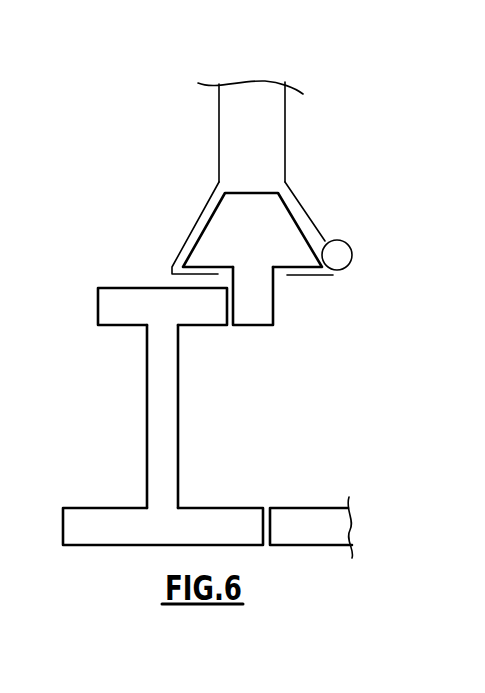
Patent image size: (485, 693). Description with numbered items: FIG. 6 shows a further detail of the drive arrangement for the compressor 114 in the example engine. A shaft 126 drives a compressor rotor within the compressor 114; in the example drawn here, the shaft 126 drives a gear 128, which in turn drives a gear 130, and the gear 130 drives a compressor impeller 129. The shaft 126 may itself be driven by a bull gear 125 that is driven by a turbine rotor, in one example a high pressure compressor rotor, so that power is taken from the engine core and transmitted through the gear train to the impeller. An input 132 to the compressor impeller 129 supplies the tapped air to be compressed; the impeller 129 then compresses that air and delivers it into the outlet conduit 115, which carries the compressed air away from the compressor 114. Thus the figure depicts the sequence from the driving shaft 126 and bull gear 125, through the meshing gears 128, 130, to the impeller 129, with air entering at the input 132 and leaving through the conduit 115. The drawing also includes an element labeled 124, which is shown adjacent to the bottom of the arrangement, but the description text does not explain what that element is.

The compressor 114 is at (348, 182).
The outlet conduit 115 is at (350, 256).
The bottom flange 124 is at (108, 527).
The bull gear 125 is at (307, 518).
The shaft 126 is at (167, 447).
The gear 128 is at (127, 305).
The compressor impeller 129 is at (225, 233).
The gear 130 is at (265, 308).
The input 132 is at (262, 124).